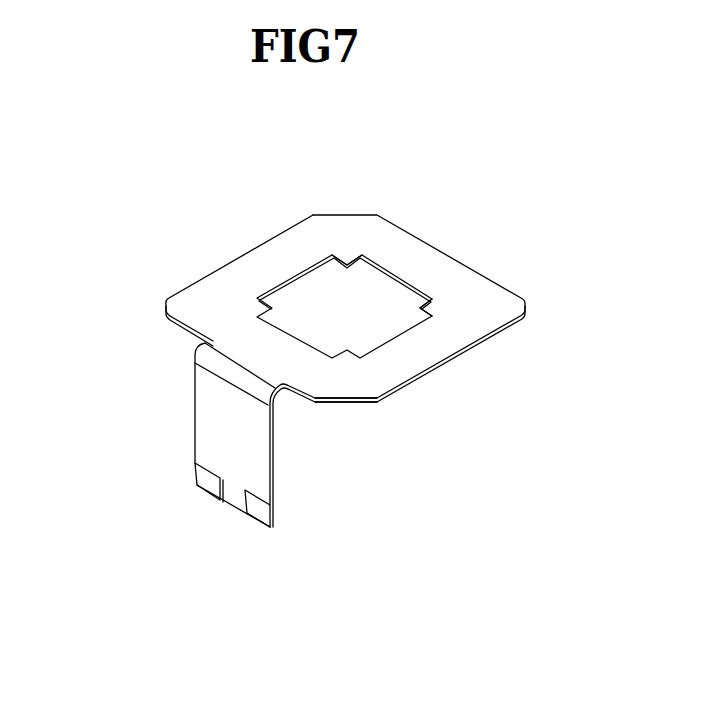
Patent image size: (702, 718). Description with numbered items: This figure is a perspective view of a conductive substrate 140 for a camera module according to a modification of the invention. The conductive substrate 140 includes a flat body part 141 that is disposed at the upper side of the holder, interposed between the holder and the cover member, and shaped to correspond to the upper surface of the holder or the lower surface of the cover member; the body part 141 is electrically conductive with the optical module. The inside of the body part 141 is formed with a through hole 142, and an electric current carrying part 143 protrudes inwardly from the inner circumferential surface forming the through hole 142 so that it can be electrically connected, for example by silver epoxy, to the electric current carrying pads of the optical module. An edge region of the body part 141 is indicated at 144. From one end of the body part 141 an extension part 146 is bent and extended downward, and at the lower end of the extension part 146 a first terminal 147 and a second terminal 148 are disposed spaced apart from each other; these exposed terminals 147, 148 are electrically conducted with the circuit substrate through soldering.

The conductive substrate 140 is at (159, 169).
The body part 141 is at (422, 348).
The through hole 142 is at (313, 292).
The electric current carrying part 143 is at (428, 300).
The edge portion 144 is at (355, 407).
The extension part 146 is at (212, 413).
The first terminal 147 is at (215, 482).
The second terminal 148 is at (262, 509).